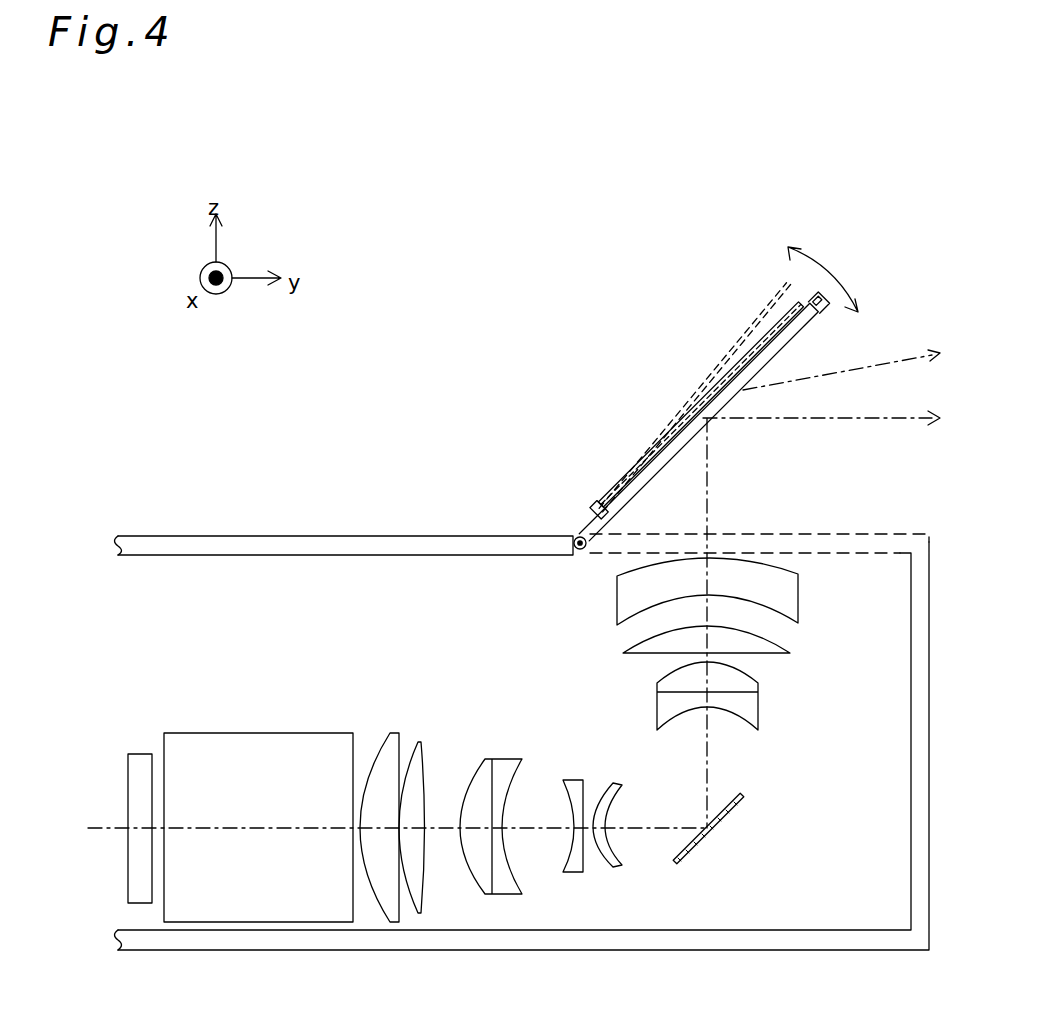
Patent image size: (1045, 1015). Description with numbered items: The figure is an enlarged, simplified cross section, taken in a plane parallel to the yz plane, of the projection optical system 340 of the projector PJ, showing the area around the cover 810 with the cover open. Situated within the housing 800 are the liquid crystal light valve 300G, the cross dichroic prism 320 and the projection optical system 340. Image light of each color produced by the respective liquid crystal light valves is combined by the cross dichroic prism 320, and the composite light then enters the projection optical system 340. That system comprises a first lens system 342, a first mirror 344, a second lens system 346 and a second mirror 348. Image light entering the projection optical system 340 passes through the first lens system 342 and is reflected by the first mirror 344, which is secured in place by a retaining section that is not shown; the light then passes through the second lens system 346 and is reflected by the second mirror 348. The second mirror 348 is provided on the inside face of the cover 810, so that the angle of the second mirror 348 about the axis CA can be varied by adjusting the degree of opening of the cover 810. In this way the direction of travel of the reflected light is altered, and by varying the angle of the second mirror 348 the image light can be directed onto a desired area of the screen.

The projector PJ is at (211, 463).
The housing 800 is at (360, 535).
The cover 810 is at (592, 523).
The axis CA is at (574, 538).
The second mirror 348 is at (654, 470).
The projection optical system 340 is at (490, 644).
The first lens system 342 is at (615, 736).
The first mirror 344 is at (722, 812).
The second lens system 346 is at (613, 559).
The cross dichroic prism 320 is at (250, 733).
The liquid crystal light valve 300G is at (134, 754).